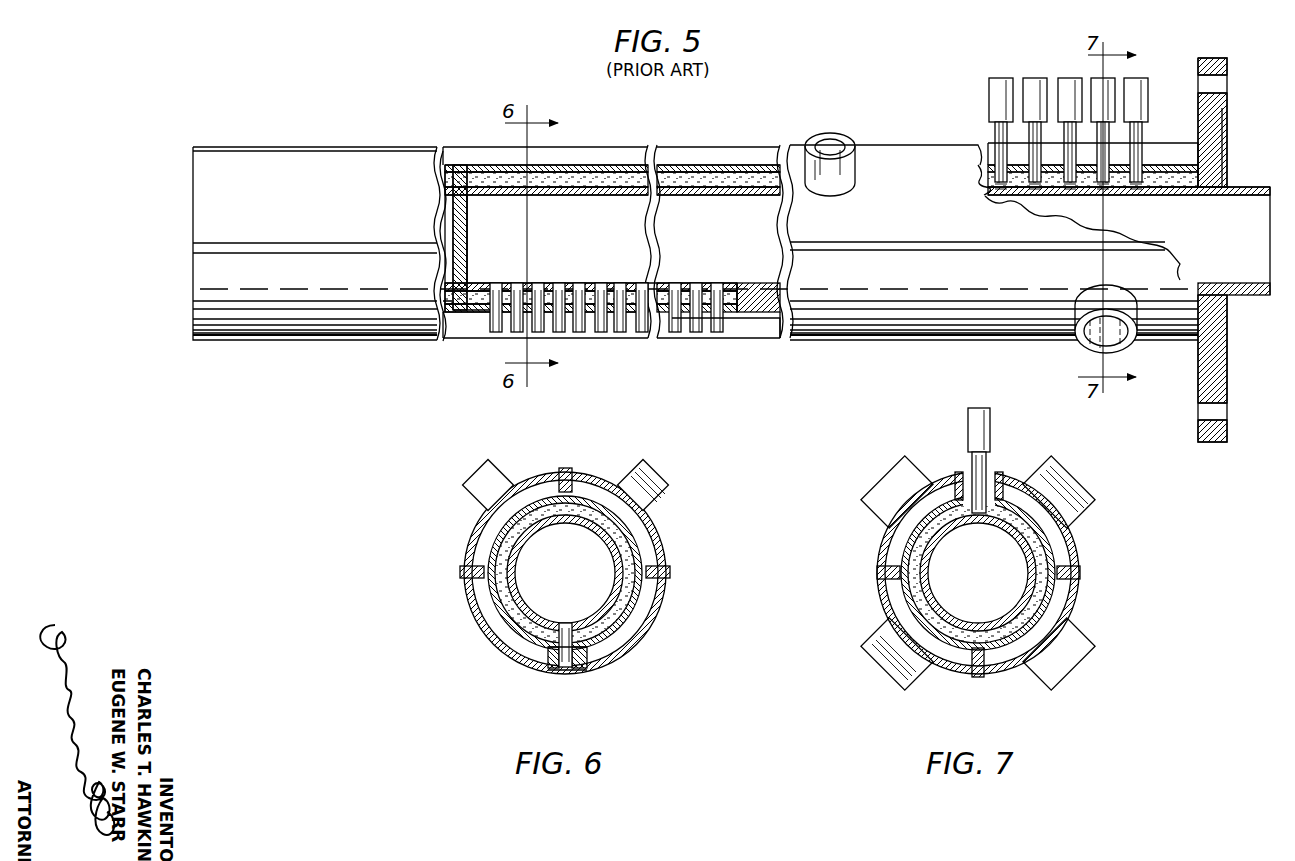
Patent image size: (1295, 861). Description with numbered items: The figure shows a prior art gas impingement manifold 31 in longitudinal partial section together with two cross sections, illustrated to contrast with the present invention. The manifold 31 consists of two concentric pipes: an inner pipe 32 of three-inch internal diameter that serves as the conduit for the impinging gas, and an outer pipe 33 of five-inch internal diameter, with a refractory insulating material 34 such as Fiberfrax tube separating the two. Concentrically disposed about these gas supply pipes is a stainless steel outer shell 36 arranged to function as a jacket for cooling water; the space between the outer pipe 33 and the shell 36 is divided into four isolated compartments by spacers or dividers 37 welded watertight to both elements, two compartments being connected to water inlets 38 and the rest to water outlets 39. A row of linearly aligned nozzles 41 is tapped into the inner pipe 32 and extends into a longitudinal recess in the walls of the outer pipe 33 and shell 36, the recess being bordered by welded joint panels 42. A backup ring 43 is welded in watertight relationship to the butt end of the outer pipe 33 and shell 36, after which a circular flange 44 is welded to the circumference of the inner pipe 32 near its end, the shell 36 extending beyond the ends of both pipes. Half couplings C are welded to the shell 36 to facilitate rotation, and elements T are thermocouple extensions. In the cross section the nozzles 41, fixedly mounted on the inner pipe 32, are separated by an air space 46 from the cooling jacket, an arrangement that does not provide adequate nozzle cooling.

In FIG. 5, the gas impingement manifold 31 is at (366, 147).
In FIG. 5, the inner pipe 32 is at (566, 195).
In FIG. 6, the inner pipe 32 is at (606, 544).
In FIG. 7, the inner pipe 32 is at (1006, 528).
In FIG. 5, the outer pipe 33 is at (712, 165).
In FIG. 6, the outer pipe 33 is at (640, 540).
In FIG. 7, the outer pipe 33 is at (1060, 548).
In FIG. 5, the refractory insulating material 34 is at (613, 188).
In FIG. 6, the refractory insulating material 34 is at (646, 603).
In FIG. 7, the refractory insulating material 34 is at (1042, 590).
In FIG. 5, the outer shell 36 is at (207, 186).
In FIG. 6, the outer shell 36 is at (470, 530).
In FIG. 7, the outer shell 36 is at (878, 540).
In FIG. 5, the spacers or dividers 37 is at (352, 243).
In FIG. 6, the spacers or dividers 37 is at (565, 468).
In FIG. 7, the spacers or dividers 37 is at (877, 573).
In FIG. 5, the water inlets 38 is at (1082, 343).
In FIG. 7, the water inlets 38 is at (882, 660).
In FIG. 7, the water outlets 39 is at (882, 486).
In FIG. 5, the nozzles 41 is at (643, 332).
In FIG. 6, the nozzles 41 is at (565, 632).
In FIG. 5, the welded joint panels 42 is at (750, 328).
In FIG. 6, the welded joint panels 42 is at (548, 668).
In FIG. 5, the backup ring 43 is at (1193, 160).
In FIG. 5, the circular flange 44 is at (1220, 154).
In FIG. 6, the air space 46 is at (566, 673).
In FIG. 5, the half couplings C is at (831, 140).
In FIG. 6, the half couplings C is at (481, 488).
In FIG. 5, the thermocouple extensions T is at (1040, 92).
In FIG. 7, the thermocouple extensions T is at (975, 432).